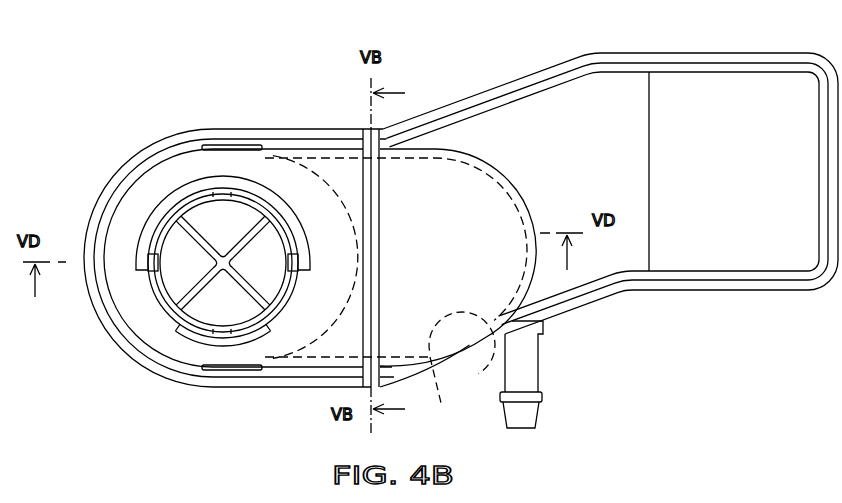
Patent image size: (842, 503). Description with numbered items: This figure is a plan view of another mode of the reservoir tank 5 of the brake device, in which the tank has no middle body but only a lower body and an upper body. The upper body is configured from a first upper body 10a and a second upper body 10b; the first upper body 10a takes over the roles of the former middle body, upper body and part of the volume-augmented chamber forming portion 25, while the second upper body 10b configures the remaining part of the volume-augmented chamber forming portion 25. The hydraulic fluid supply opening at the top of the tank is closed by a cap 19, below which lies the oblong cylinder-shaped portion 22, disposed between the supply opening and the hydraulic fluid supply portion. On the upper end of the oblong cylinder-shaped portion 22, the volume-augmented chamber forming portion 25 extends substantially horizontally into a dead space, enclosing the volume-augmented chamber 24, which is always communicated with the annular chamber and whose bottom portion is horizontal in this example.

The reservoir tank 5 is at (478, 76).
The first upper body 10a is at (168, 167).
The second upper body 10b is at (500, 281).
The cap 19 is at (208, 186).
The oblong cylinder-shaped portion 22 is at (107, 300).
The volume-augmented chamber 24 is at (482, 373).
The volume-augmented chamber forming portion 25 is at (512, 217).